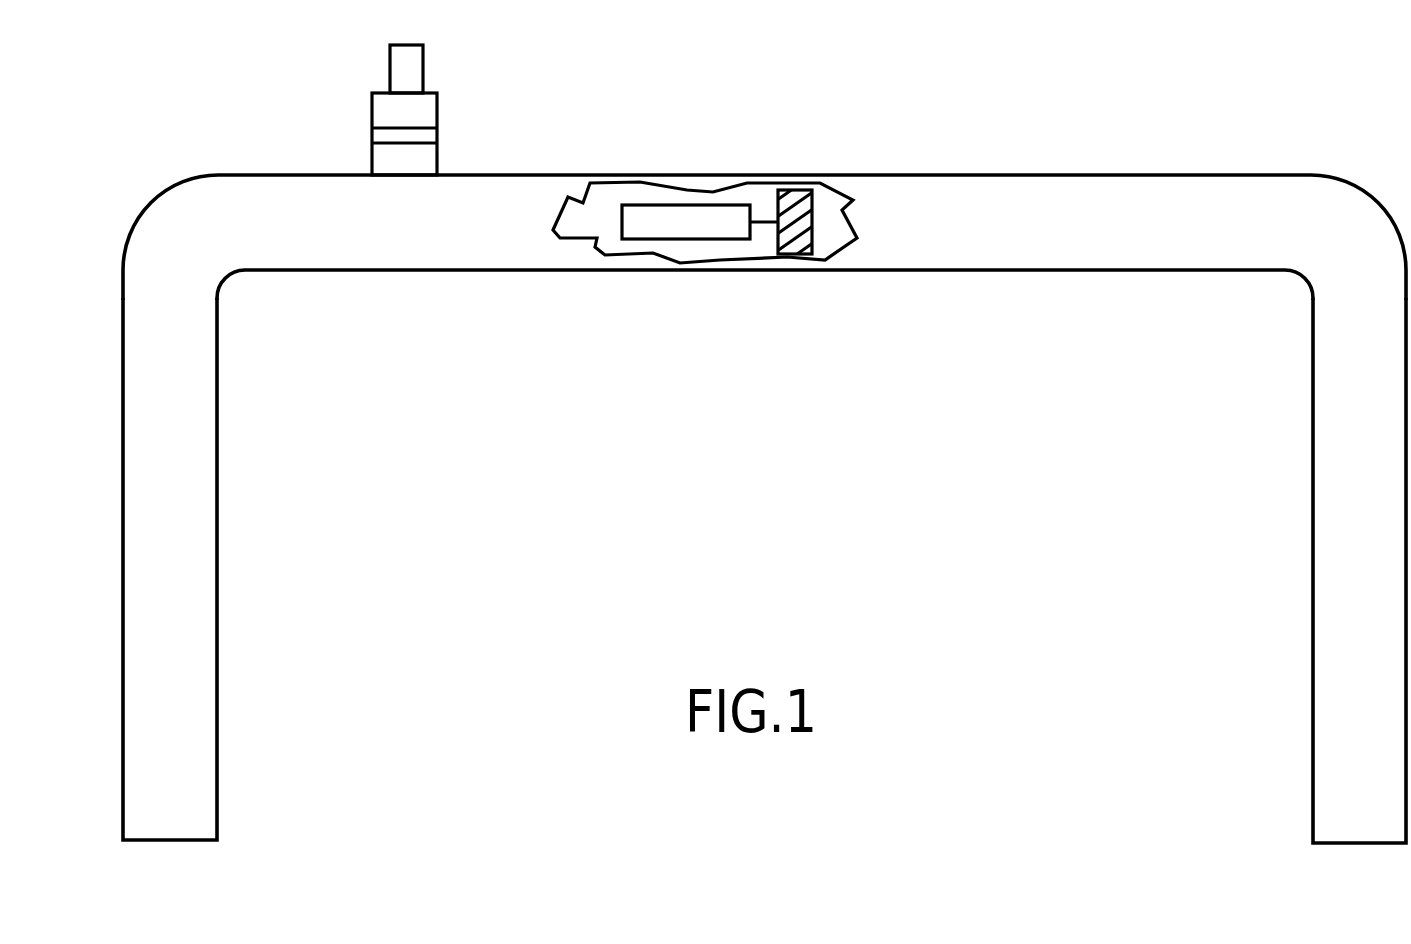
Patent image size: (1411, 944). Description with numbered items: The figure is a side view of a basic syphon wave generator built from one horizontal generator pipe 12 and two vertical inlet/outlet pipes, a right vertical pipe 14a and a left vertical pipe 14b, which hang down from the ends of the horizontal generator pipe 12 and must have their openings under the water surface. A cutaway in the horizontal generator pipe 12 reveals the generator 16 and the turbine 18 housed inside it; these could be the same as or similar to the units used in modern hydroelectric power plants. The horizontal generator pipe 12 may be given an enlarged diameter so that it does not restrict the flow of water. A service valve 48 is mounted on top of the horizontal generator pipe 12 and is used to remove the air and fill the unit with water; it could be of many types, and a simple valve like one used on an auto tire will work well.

The horizontal generator pipe 12 is at (457, 276).
The right vertical inlet/outlet pipe 14a is at (1302, 685).
The left vertical inlet/outlet pipe 14b is at (230, 627).
The generator 16 is at (702, 239).
The turbine 18 is at (807, 254).
The service valve 48 is at (372, 143).